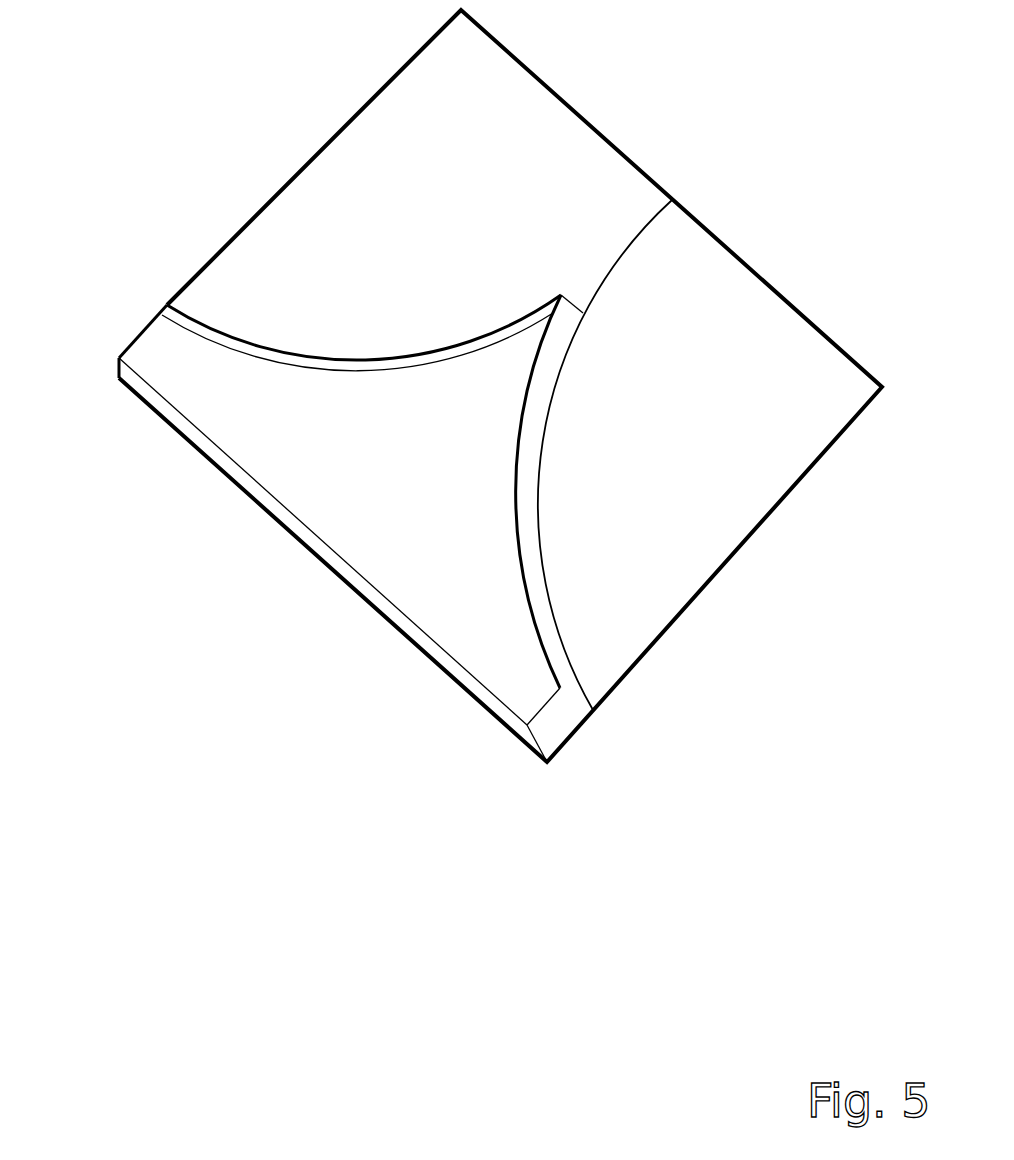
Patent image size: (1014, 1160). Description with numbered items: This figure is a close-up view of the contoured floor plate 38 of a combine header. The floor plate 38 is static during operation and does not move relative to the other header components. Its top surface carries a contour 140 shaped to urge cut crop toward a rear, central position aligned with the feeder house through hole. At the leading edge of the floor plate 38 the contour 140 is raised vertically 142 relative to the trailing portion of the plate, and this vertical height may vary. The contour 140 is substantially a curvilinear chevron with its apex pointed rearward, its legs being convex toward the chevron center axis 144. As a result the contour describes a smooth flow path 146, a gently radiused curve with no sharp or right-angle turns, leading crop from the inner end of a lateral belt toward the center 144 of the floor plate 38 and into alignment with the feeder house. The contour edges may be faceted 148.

The floor plate 38 is at (483, 153).
The contour 140 is at (288, 606).
The raised vertical height 142 is at (118, 357).
The chevron center axis 144 is at (623, 250).
The smooth flow path 146 is at (682, 405).
The faceted contour edges 148 is at (557, 660).